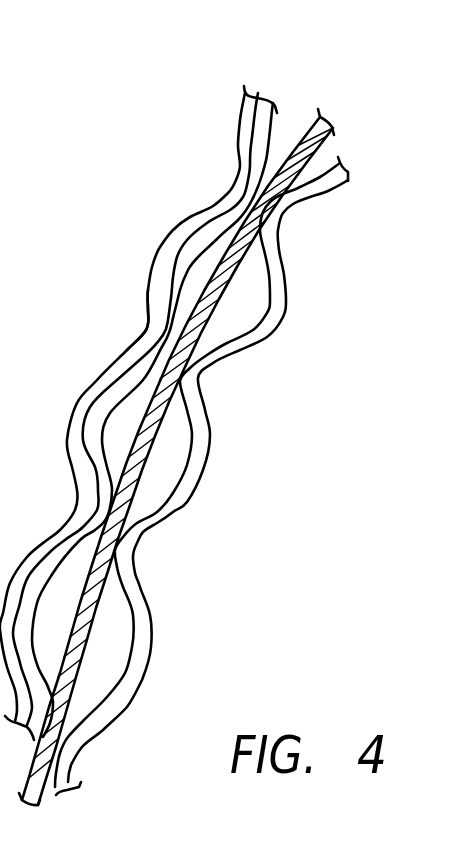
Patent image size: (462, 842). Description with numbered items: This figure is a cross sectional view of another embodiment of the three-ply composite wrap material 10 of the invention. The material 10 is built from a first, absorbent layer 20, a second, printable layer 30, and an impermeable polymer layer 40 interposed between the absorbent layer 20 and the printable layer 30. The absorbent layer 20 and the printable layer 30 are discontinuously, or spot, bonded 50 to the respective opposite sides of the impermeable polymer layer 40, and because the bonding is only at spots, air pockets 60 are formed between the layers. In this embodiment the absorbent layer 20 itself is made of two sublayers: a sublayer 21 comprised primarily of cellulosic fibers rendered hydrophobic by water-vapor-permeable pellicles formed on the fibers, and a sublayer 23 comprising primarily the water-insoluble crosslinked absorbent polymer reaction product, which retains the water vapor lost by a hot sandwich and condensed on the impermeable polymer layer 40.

The composite wrap material 10 is at (270, 415).
The absorbent layer 20 is at (168, 206).
The sublayer 21 is at (256, 80).
The sublayer 23 is at (276, 88).
The printable layer 30 is at (358, 161).
The impermeable polymer layer 40 is at (338, 108).
The spot bonds 50 is at (133, 330).
The air pockets 60 is at (244, 298).